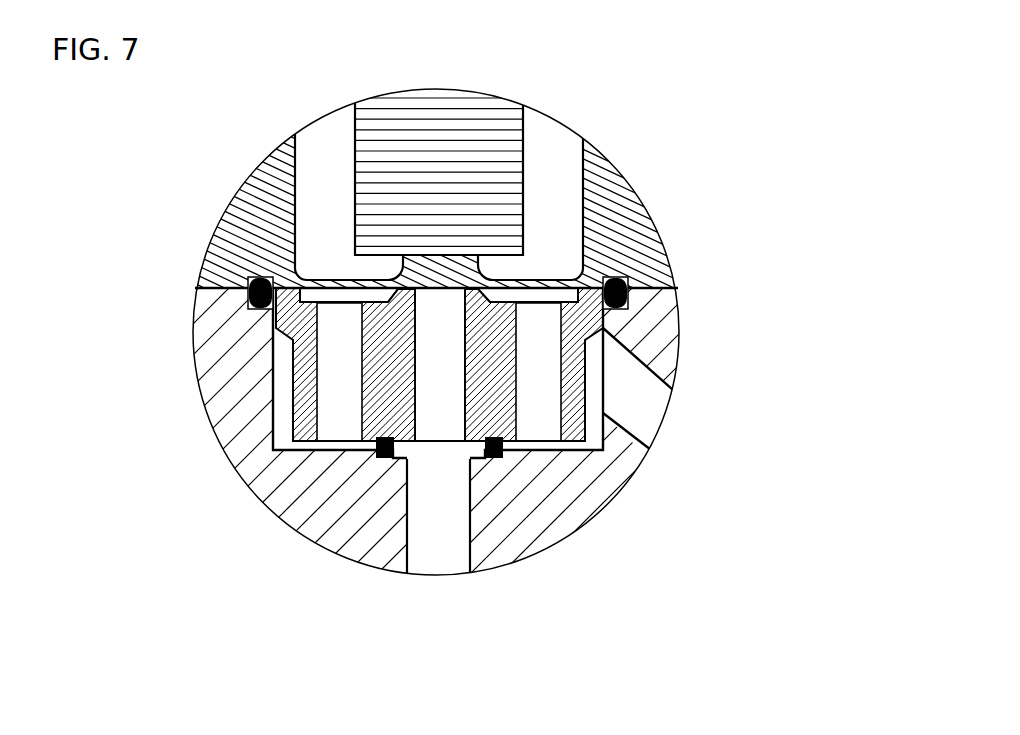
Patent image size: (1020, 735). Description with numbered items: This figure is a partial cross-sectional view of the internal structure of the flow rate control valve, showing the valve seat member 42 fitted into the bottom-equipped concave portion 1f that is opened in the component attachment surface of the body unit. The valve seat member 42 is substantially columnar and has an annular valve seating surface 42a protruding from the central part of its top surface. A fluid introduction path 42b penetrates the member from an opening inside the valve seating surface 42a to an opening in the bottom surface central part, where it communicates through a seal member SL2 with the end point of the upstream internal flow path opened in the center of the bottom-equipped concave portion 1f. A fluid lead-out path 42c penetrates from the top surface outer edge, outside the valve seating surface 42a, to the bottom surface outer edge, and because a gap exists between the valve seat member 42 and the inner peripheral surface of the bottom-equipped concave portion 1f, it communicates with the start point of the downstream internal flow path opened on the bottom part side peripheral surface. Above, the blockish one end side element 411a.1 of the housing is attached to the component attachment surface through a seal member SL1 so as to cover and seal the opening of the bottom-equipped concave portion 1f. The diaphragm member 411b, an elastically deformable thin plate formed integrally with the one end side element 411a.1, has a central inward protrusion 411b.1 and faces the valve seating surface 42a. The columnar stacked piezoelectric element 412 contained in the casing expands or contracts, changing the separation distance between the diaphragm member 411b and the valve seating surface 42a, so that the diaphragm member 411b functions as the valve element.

The stacked piezoelectric element 412 is at (353, 187).
The protrusion 411b.1 is at (462, 256).
The one end side element 411a.1 is at (631, 197).
The diaphragm member 411b is at (543, 278).
The valve seating surface 42a is at (400, 278).
The valve seat member 42 is at (294, 396).
The fluid introduction path 42b is at (460, 377).
The fluid lead-out path 42c is at (360, 377).
The seal member SL1 is at (633, 304).
The seal member SL2 is at (505, 453).
The bottom-equipped concave portion 1f is at (312, 452).